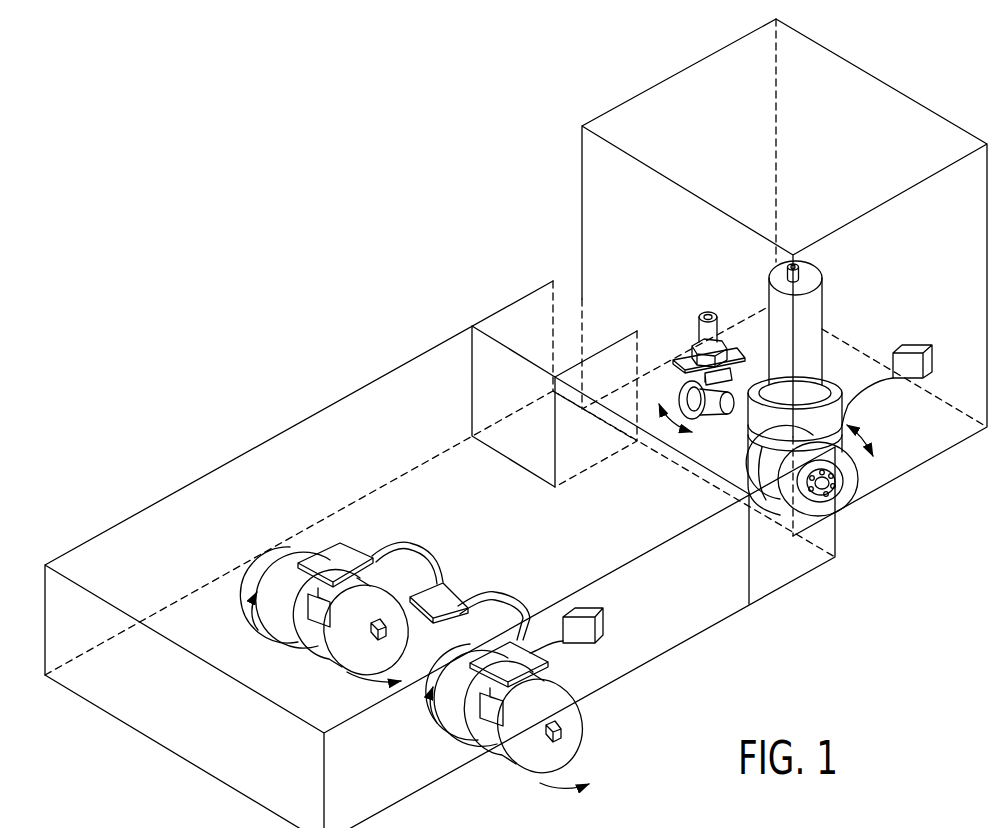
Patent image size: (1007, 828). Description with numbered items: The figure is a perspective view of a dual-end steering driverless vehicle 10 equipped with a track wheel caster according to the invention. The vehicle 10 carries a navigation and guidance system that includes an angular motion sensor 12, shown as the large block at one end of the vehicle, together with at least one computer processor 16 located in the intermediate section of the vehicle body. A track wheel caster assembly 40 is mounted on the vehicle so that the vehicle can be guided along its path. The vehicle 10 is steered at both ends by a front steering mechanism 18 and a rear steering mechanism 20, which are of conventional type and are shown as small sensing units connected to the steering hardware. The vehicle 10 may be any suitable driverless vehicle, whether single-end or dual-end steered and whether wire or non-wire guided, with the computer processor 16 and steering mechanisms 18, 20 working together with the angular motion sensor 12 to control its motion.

The dual-end steering driverless vehicle 10 is at (478, 491).
The angular motion sensor 12 is at (522, 307).
The computer processor 16 is at (641, 494).
The front steering mechanism 18 is at (933, 357).
The rear steering mechanism 20 is at (604, 620).
The track wheel caster assembly 40 is at (688, 342).